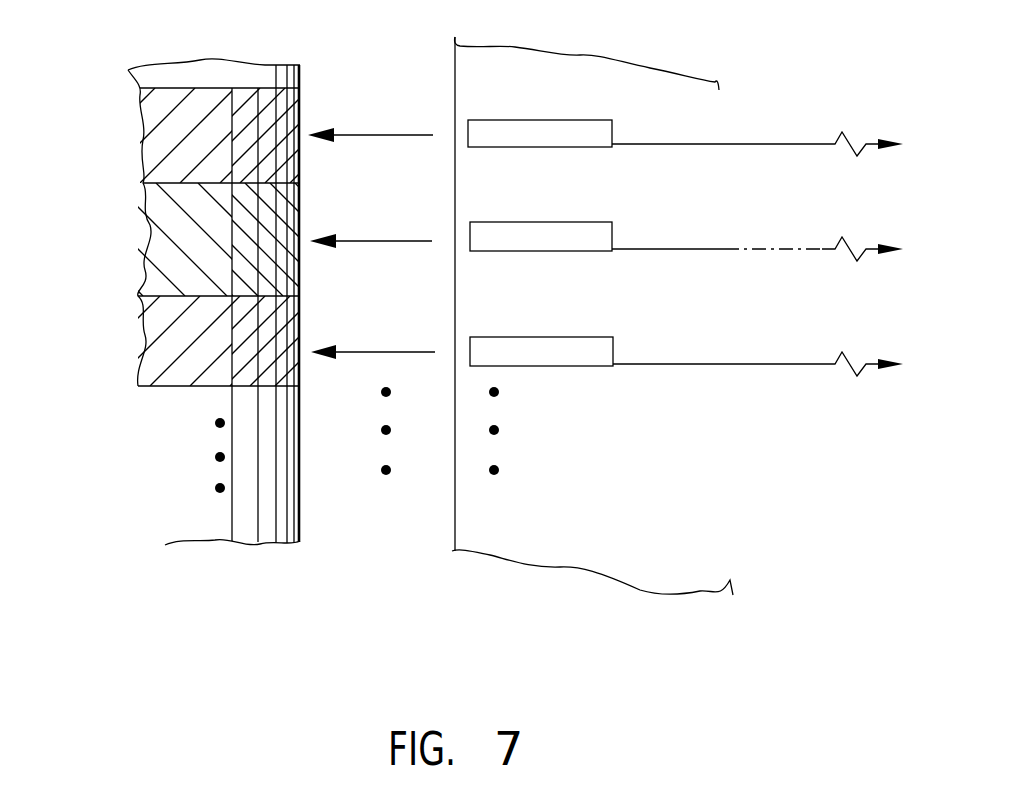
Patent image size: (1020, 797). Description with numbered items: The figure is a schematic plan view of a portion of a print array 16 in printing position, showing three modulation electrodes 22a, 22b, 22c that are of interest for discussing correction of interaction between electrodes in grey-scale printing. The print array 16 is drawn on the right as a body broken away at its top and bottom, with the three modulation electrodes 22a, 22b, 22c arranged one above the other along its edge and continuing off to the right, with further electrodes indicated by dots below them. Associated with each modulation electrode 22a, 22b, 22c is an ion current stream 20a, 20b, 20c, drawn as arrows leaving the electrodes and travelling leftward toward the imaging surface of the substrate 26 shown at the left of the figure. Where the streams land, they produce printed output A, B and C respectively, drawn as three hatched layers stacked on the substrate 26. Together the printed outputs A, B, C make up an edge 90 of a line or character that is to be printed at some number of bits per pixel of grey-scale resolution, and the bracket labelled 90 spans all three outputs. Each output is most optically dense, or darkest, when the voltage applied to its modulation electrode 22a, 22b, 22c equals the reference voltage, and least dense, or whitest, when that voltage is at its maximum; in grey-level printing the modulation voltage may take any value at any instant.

The print array 16 is at (518, 48).
The ion current stream 20a is at (390, 135).
The ion current stream 20b is at (392, 241).
The ion current stream 20c is at (388, 352).
The modulation electrode 22a is at (600, 120).
The modulation electrode 22b is at (598, 222).
The modulation electrode 22c is at (590, 337).
The substrate 26 is at (228, 535).
The edge 90 is at (78, 83).
The printed output A is at (148, 122).
The printed output B is at (152, 258).
The printed output C is at (175, 368).